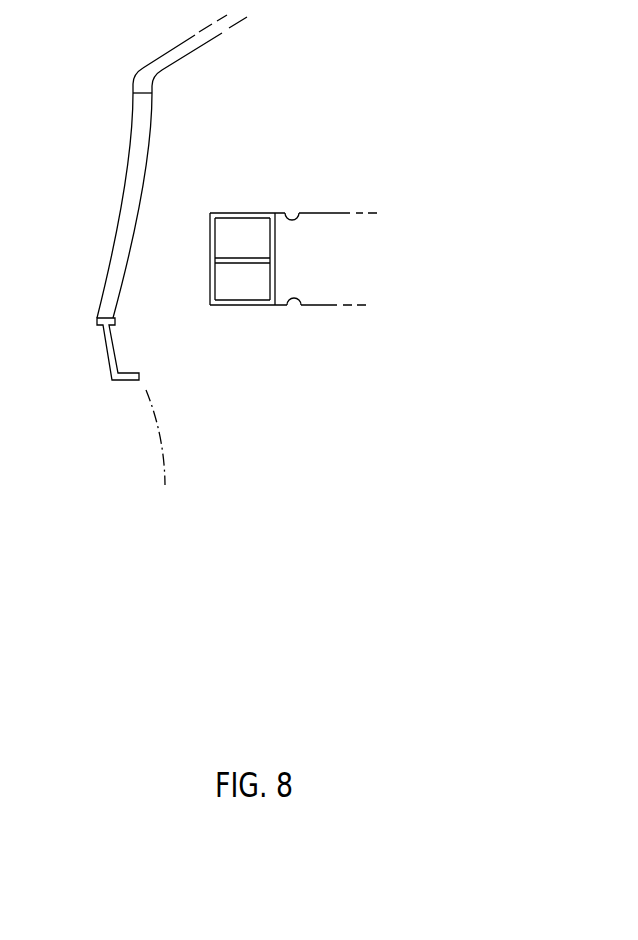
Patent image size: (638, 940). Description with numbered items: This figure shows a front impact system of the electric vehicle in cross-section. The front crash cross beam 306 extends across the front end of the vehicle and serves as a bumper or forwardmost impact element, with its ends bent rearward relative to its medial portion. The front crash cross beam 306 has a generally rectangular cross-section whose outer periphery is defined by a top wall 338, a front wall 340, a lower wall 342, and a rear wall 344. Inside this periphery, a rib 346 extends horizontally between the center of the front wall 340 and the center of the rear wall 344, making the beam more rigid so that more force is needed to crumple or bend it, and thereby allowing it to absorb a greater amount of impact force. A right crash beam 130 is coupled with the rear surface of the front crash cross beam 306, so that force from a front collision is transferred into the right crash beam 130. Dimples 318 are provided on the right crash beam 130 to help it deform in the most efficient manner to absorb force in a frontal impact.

The right crash beam 130 is at (377, 212).
The front crash cross beam 306 is at (210, 303).
The dimples 318 is at (293, 212).
The top wall 338 is at (242, 212).
The front wall 340 is at (210, 280).
The lower wall 342 is at (242, 305).
The rear wall 344 is at (275, 240).
The rib 346 is at (232, 258).